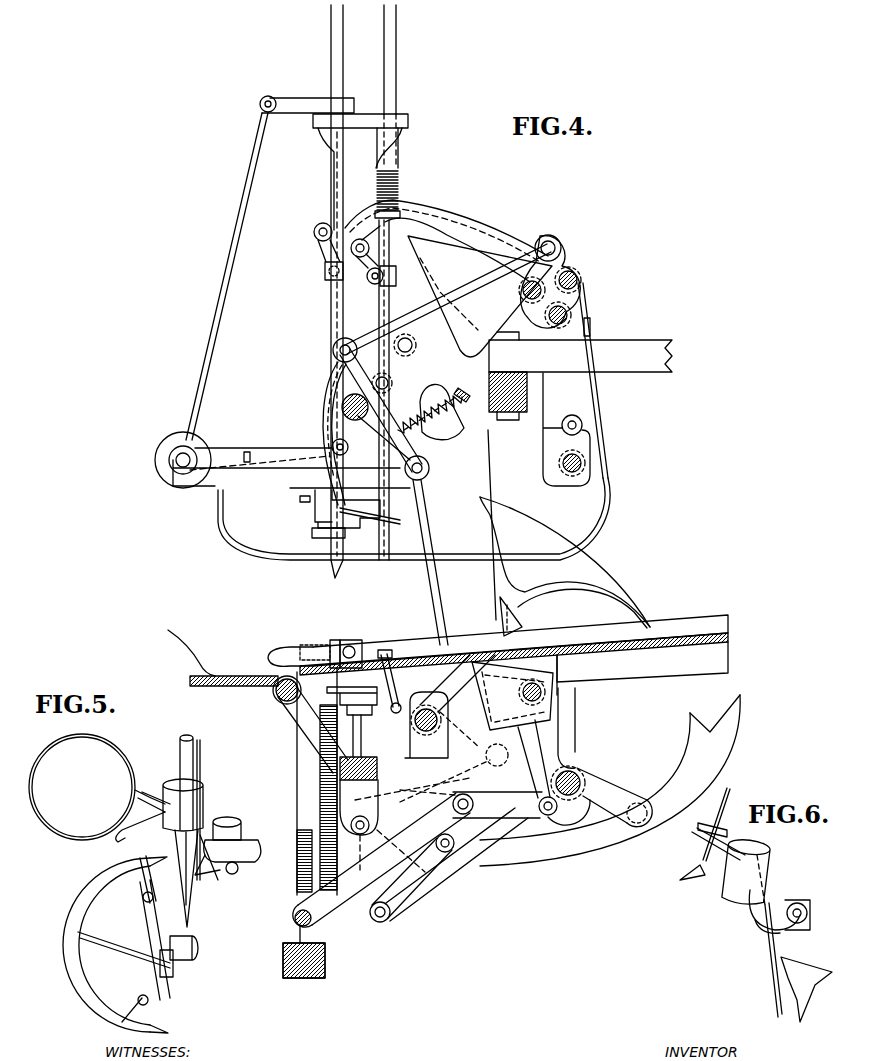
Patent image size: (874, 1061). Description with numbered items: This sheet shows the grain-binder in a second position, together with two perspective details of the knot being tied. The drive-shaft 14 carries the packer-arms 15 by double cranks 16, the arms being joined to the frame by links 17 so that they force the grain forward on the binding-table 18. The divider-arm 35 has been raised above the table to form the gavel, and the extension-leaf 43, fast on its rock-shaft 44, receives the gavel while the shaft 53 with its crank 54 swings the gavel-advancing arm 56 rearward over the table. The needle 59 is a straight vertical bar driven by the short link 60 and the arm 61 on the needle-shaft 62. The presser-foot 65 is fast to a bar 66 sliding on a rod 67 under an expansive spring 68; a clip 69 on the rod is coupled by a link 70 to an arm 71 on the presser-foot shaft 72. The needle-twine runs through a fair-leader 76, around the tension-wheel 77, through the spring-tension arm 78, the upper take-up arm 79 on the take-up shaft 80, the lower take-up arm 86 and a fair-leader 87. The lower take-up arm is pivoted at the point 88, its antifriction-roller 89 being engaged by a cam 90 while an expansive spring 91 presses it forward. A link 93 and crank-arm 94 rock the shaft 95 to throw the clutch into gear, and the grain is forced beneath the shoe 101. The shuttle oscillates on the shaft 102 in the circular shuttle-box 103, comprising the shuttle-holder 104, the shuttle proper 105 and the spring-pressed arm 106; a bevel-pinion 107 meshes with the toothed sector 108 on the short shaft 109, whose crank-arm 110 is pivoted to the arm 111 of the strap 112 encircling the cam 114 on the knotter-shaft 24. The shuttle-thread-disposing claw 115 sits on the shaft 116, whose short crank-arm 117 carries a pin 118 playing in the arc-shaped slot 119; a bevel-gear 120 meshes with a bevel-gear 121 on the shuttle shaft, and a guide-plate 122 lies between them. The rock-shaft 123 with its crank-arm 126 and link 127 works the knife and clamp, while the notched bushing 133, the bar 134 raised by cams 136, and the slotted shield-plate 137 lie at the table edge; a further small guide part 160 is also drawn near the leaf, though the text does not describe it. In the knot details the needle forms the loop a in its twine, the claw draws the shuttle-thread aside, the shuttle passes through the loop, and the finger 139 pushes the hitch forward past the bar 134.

In FIG. 4, the drive-shaft 14 is at (582, 778).
In FIG. 4, the packer-arms 15 is at (610, 780).
In FIG. 4, the double cranks 16 is at (548, 740).
In FIG. 4, the links 17 is at (405, 850).
In FIG. 4, the binding-table 18 is at (690, 632).
In FIG. 4, the knotter-shaft 24 is at (556, 696).
In FIG. 4, the divider-arm 35 is at (500, 528).
In FIG. 4, the extension-leaf 43 is at (232, 684).
In FIG. 4, the rock-shaft 44 is at (275, 692).
In FIG. 4, the shaft 53 is at (342, 410).
In FIG. 4, the crank 54 is at (358, 440).
In FIG. 4, the gavel-advancing arm 56 is at (486, 533).
In FIG. 4, the needle 59 is at (342, 86).
In FIG. 5, the needle 59 is at (194, 774).
In FIG. 4, the short link 60 is at (322, 246).
In FIG. 4, the arm 61 is at (410, 206).
In FIG. 4, the needle-shaft 62 is at (582, 308).
In FIG. 4, the presser-foot 65 is at (318, 531).
In FIG. 4, the bar 66 is at (378, 312).
In FIG. 4, the rod 67 is at (396, 112).
In FIG. 4, the expansive spring 68 is at (398, 185).
In FIG. 4, the clip 69 is at (405, 290).
In FIG. 4, the link 70 is at (370, 272).
In FIG. 4, the arm 71 is at (360, 232).
In FIG. 4, the presser-foot shaft 72 is at (578, 283).
In FIG. 4, the fair-leader 76 is at (587, 733).
In FIG. 4, the tension-wheel 77 is at (213, 452).
In FIG. 4, the spring-tension arm 78 is at (250, 455).
In FIG. 4, the upper take-up arm 79 is at (480, 310).
In FIG. 4, the take-up shaft 80 is at (536, 302).
In FIG. 4, the lower take-up arm 86 is at (340, 509).
In FIG. 4, the fair-leader 87 is at (305, 492).
In FIG. 4, the pivot point 88 is at (414, 350).
In FIG. 4, the antifriction-roller 89 is at (395, 382).
In FIG. 4, the cam 90 is at (345, 386).
In FIG. 4, the expansive spring 91 is at (448, 392).
In FIG. 4, the link 93 is at (470, 416).
In FIG. 4, the crank-arm 94 is at (584, 426).
In FIG. 4, the shaft 95 is at (584, 463).
In FIG. 4, the shoe 101 is at (600, 522).
In FIG. 4, the shaft 102 is at (338, 806).
In FIG. 5, the shaft 102 is at (245, 838).
In FIG. 4, the shuttle-box 103 is at (298, 752).
In FIG. 5, the shuttle-holder 104 is at (180, 970).
In FIG. 5, the shuttle proper 105 is at (115, 945).
In FIG. 6, the shuttle proper 105 is at (805, 1010).
In FIG. 5, the arm 106 is at (118, 936).
In FIG. 4, the bevel-pinion 107 is at (430, 795).
In FIG. 4, the toothed sector 108 is at (455, 880).
In FIG. 4, the short shaft 109 is at (470, 850).
In FIG. 4, the crank-arm 110 is at (517, 818).
In FIG. 4, the arm 111 is at (556, 765).
In FIG. 4, the strap 112 is at (548, 664).
In FIG. 4, the cam 114 is at (500, 700).
In FIG. 4, the shuttle-thread-disposing claw 115 is at (343, 642).
In FIG. 5, the shuttle-thread-disposing claw 115 is at (248, 862).
In FIG. 6, the shuttle-thread-disposing claw 115 is at (790, 902).
In FIG. 4, the shaft 116 is at (362, 740).
In FIG. 4, the short crank-arm 117 is at (380, 696).
In FIG. 5, the short crank-arm 117 is at (240, 872).
In FIG. 4, the pin 118 is at (365, 652).
In FIG. 5, the pin 118 is at (240, 832).
In FIG. 6, the pin 118 is at (808, 910).
In FIG. 5, the arc-shaped slot 119 is at (226, 872).
In FIG. 6, the arc-shaped slot 119 is at (762, 930).
In FIG. 4, the bevel-gear 120 is at (393, 748).
In FIG. 4, the bevel-gear 121 is at (360, 846).
In FIG. 4, the guide-plate 122 is at (300, 702).
In FIG. 4, the rock-shaft 123 is at (382, 648).
In FIG. 4, the crank-arm 126 is at (400, 682).
In FIG. 4, the link 127 is at (434, 704).
In FIG. 5, the notched bushing 133 is at (205, 804).
In FIG. 6, the notched bushing 133 is at (760, 875).
In FIG. 4, the bar 134 is at (322, 645).
In FIG. 5, the bar 134 is at (146, 792).
In FIG. 6, the bar 134 is at (700, 855).
In FIG. 4, the cams 136 is at (292, 650).
In FIG. 4, the slotted shield-plate 137 is at (338, 642).
In FIG. 4, the finger 139 is at (368, 640).
In FIG. 6, the finger 139 is at (721, 824).
In FIG. 4, the guide wire 160 is at (210, 668).
In FIG. 5, the loop a is at (165, 838).